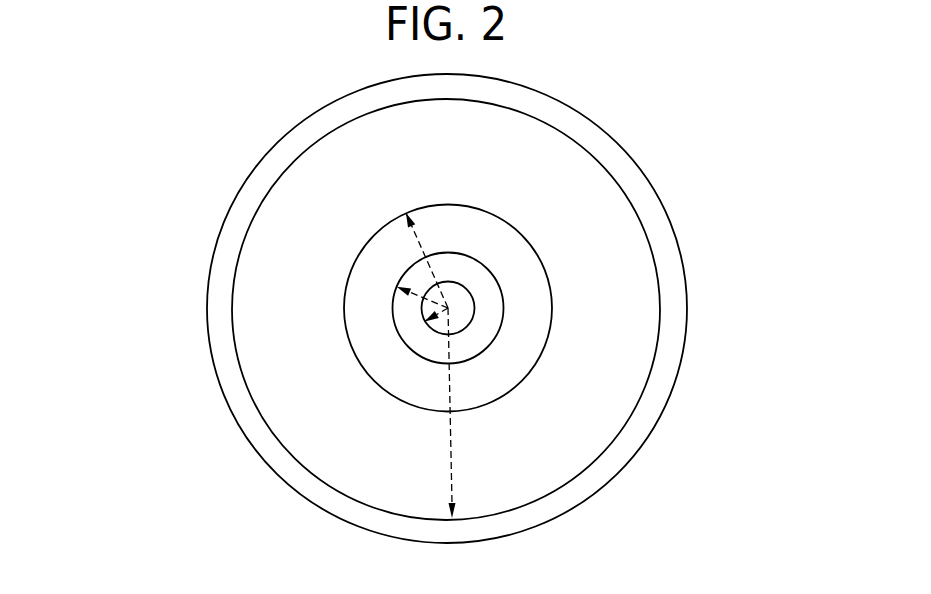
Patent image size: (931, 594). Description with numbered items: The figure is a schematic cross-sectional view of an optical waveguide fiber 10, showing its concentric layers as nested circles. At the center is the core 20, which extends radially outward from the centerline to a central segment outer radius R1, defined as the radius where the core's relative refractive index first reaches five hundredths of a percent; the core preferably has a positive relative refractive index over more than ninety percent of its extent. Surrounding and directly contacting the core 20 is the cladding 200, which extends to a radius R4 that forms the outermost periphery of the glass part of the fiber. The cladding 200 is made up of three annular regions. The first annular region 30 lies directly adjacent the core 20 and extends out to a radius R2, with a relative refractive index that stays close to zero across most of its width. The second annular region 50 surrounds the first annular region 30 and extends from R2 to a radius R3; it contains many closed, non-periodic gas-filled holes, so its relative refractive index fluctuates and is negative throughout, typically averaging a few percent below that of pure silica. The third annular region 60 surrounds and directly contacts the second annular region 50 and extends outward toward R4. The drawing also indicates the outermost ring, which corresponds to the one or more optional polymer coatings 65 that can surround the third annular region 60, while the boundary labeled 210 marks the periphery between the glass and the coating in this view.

The optical fiber 10 is at (172, 197).
The core 20 is at (458, 314).
The first annular region 30 is at (485, 311).
The second annular region 50 is at (503, 276).
The third annular region 60 is at (575, 238).
The polymer coating 65 is at (632, 180).
The cladding 200 is at (765, 317).
The peripheral portion 210 is at (227, 384).
The central segment outer radius R1 is at (425, 328).
The first annular region outer radius R2 is at (404, 287).
The second annular region outer radius R3 is at (409, 247).
The cladding outer radius R4 is at (452, 495).